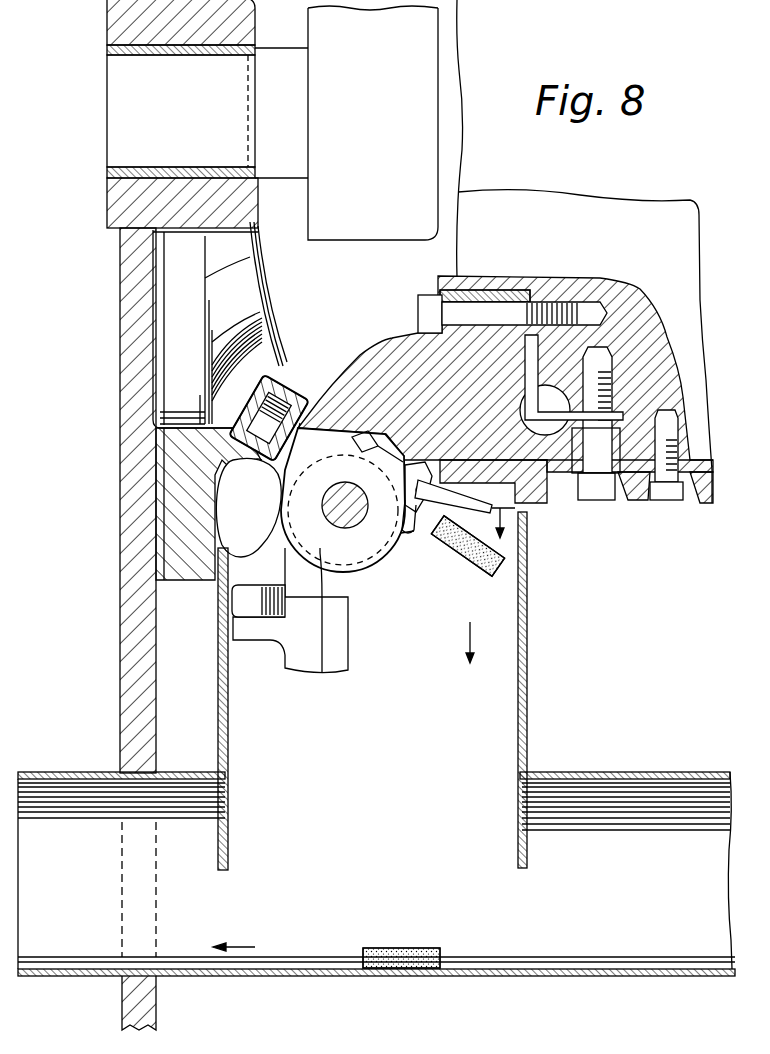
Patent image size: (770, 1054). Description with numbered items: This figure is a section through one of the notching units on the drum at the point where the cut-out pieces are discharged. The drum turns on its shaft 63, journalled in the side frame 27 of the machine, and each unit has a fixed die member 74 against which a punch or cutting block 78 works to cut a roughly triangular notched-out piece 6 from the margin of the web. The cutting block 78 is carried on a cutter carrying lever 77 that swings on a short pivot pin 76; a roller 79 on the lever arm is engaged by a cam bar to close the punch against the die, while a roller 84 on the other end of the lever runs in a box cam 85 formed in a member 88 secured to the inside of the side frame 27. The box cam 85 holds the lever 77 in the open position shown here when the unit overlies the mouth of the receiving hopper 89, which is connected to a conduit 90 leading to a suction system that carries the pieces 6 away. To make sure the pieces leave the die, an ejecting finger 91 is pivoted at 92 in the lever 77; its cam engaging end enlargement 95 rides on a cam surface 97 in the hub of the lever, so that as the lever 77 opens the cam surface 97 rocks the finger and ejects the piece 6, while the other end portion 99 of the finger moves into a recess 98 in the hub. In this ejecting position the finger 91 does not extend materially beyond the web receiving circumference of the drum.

The shaft 63 is at (117, 107).
The side frame 27 is at (130, 452).
The box cam member 88 is at (288, 398).
The box cam 85 is at (297, 420).
The roller 84 is at (254, 466).
The cutter carrying lever 77 is at (278, 535).
The pivot pin 76 is at (345, 520).
The hub recess 98 is at (383, 535).
The cam surface 97 is at (410, 480).
The cam engaging end enlargement 95 is at (412, 497).
The other end portion of ejecting finger 99 is at (410, 533).
The pivot 92 is at (425, 505).
The die member 74 is at (472, 470).
The ejecting finger 91 is at (455, 505).
The notched-out piece 6 is at (475, 565).
The punch or cutting block 78 is at (345, 655).
The roller 79 is at (232, 602).
The receiving hopper 89 is at (218, 676).
The conduit 90 is at (262, 975).